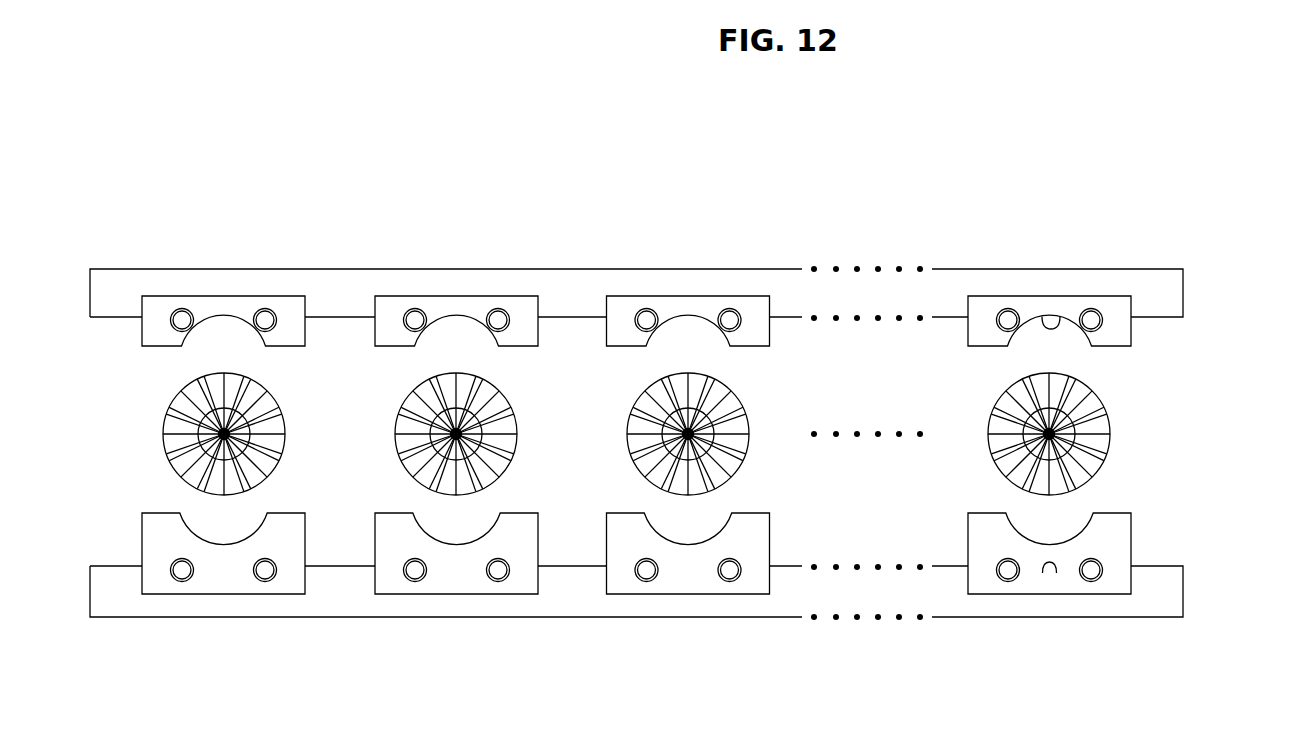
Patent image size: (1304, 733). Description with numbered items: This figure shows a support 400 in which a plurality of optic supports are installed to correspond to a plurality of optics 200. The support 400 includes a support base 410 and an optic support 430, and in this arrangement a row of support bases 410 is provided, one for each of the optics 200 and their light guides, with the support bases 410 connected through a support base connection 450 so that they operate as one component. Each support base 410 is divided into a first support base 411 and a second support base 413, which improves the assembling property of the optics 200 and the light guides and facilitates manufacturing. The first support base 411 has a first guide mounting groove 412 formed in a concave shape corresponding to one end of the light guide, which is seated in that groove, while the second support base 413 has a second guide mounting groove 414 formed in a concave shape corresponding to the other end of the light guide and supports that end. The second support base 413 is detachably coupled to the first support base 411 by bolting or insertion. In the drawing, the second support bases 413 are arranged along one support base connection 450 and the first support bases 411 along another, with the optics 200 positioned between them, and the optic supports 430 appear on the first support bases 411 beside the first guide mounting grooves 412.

The optics 200 is at (1128, 422).
The support 400 is at (691, 451).
The support base 410 is at (1126, 569).
The first support base 411 is at (1122, 546).
The first guide mounting groove 412 is at (1052, 575).
The second support base 413 is at (1115, 278).
The second guide mounting groove 414 is at (1053, 318).
The optic support 430 is at (1004, 580).
The support base connection 450 is at (1183, 283).